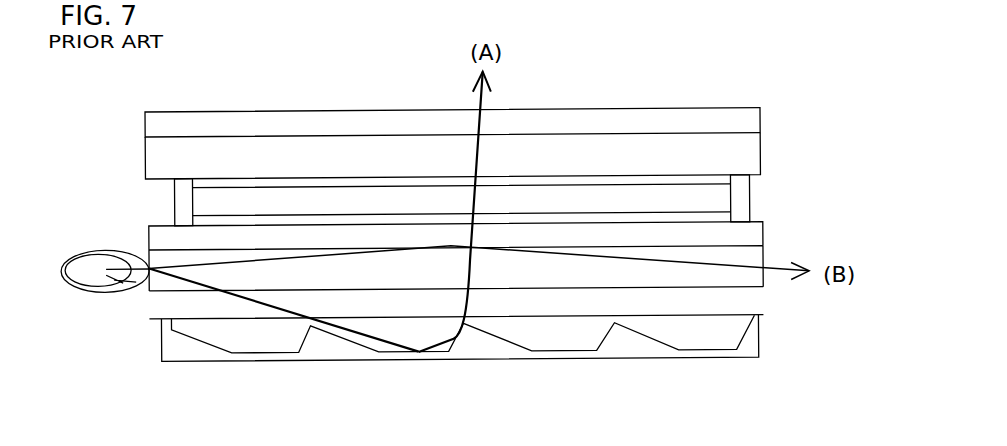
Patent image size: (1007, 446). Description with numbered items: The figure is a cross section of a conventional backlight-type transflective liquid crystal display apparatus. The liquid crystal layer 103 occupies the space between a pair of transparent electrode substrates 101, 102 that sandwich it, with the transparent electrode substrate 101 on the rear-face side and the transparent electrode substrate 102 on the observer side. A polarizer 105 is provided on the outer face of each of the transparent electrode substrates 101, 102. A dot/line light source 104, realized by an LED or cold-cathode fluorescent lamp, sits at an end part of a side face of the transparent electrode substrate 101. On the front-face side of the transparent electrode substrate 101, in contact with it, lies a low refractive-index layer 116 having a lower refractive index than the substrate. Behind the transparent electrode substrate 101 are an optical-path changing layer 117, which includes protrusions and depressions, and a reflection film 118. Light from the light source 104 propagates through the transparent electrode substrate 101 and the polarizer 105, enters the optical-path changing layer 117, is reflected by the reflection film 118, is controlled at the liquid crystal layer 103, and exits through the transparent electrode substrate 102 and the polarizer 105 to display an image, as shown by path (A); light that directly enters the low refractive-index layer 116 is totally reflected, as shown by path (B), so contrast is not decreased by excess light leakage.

The transparent electrode substrate 101 is at (760, 256).
The transparent electrode substrate 102 is at (763, 153).
The liquid crystal layer 103 is at (713, 200).
The dot/line light source 104 is at (90, 253).
The polarizer 105 is at (761, 118).
The low refractive-index layer 116 is at (760, 226).
The optical-path changing layer 117 is at (738, 332).
The reflection film 118 is at (737, 356).